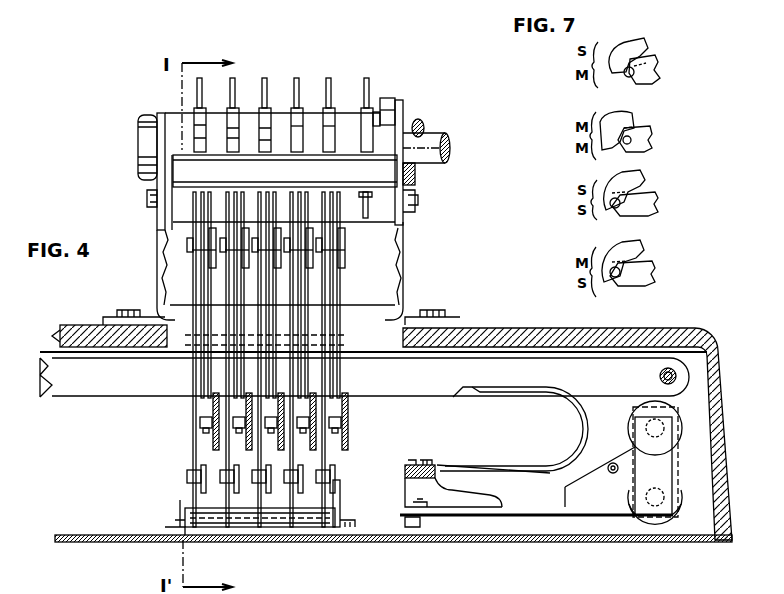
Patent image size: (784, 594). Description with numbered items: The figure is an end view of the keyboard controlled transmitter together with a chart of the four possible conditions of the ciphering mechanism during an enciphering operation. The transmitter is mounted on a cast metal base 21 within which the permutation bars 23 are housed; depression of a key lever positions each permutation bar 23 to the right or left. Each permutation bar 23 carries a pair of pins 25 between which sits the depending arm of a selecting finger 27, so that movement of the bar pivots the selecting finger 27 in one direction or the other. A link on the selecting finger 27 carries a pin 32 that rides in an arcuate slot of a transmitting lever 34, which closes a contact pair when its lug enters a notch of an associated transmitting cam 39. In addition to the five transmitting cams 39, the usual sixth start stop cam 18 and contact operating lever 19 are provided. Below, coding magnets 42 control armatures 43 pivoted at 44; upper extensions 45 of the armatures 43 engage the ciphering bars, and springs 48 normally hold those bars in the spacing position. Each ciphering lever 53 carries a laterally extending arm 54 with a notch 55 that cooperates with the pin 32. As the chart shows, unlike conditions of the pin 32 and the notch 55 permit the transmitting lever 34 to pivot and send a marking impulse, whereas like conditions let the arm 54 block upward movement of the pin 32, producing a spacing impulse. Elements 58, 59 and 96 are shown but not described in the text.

In FIG. 4, the start stop cam 18 is at (376, 113).
In FIG. 4, the contact operating lever 19 is at (372, 96).
In FIG. 4, the cast metal base 21 is at (675, 330).
In FIG. 4, the permutation bars 23 is at (245, 440).
In FIG. 4, the pins 25 is at (342, 422).
In FIG. 4, the selecting finger 27 is at (338, 294).
In FIG. 7, the pin 32 is at (645, 84).
In FIG. 4, the transmitting lever 34 is at (333, 90).
In FIG. 4, the transmitting cam 39 is at (290, 118).
In FIG. 4, the coding magnet 42 is at (685, 424).
In FIG. 4, the armature 43 is at (567, 493).
In FIG. 4, the pivot 44 is at (414, 523).
In FIG. 4, the upper extension 45 is at (338, 505).
In FIG. 4, the springs 48 is at (330, 475).
In FIG. 4, the ciphering lever 53 is at (324, 279).
In FIG. 7, the laterally extending arm 54 is at (658, 54).
In FIG. 7, the notch 55 is at (650, 43).
In FIG. 4, the knob 58 is at (402, 140).
In FIG. 4, the bracket 59 is at (392, 101).
In FIG. 4, the mounting plate 96 is at (402, 188).